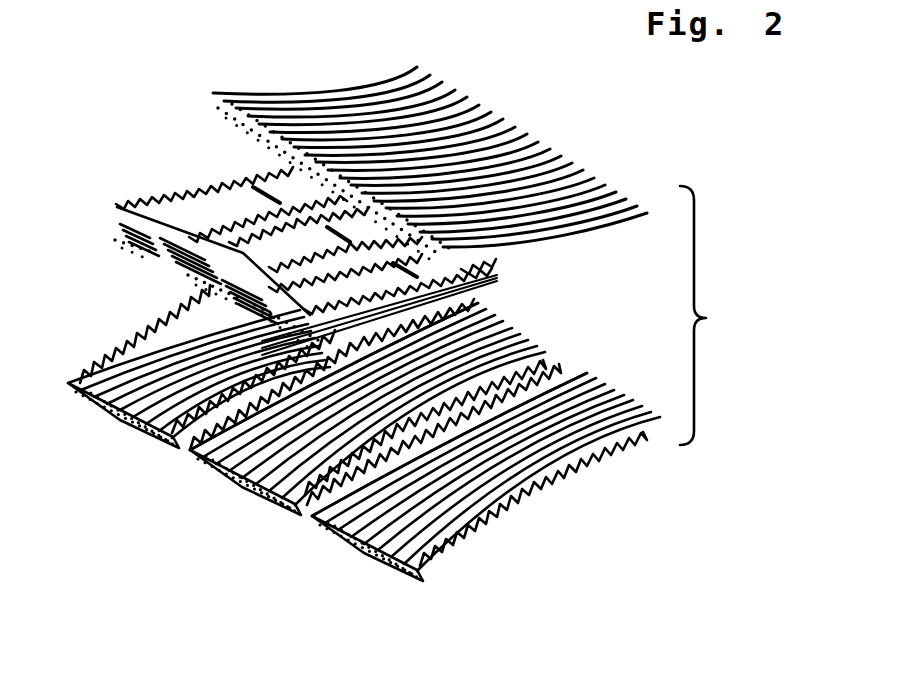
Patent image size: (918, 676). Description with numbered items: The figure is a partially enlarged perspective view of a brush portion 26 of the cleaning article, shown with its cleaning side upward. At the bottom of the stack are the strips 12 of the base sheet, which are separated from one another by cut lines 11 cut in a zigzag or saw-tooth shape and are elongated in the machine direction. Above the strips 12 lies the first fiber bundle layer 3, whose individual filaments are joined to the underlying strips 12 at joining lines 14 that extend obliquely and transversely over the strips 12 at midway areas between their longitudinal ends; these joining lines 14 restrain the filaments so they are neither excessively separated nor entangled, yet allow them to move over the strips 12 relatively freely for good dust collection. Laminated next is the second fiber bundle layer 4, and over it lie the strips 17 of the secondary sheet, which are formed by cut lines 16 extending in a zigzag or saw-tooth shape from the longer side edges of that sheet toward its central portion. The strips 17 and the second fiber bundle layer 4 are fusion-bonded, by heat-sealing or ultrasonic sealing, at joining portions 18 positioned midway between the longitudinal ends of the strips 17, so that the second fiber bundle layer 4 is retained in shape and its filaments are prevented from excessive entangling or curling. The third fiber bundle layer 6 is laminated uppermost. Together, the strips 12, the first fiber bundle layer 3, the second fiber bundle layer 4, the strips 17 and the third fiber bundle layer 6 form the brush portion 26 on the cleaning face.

The first fiber bundle layer 3 is at (125, 410).
The second fiber bundle layer 4 is at (118, 238).
The third fiber bundle layer 6 is at (563, 197).
The cut lines 11 is at (188, 442).
The strips 12 is at (140, 413).
The joining lines 14 is at (290, 303).
The cut lines 16 is at (282, 283).
The strips 17 is at (240, 253).
The joining portions 18 is at (253, 186).
The brush portions 26 is at (715, 315).